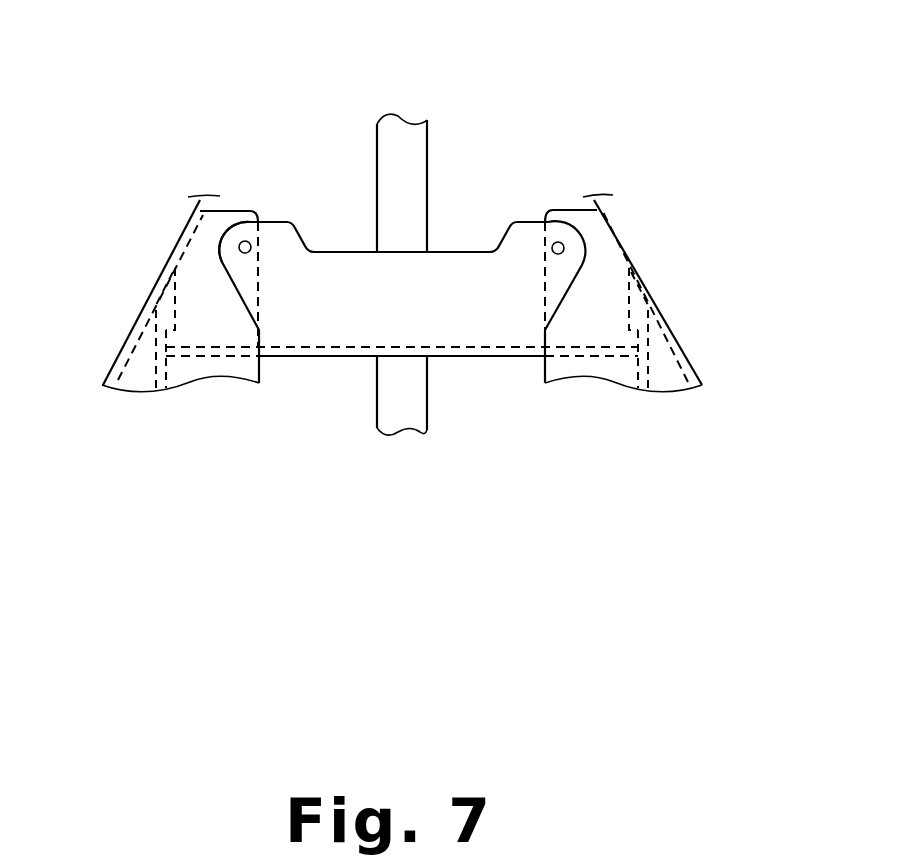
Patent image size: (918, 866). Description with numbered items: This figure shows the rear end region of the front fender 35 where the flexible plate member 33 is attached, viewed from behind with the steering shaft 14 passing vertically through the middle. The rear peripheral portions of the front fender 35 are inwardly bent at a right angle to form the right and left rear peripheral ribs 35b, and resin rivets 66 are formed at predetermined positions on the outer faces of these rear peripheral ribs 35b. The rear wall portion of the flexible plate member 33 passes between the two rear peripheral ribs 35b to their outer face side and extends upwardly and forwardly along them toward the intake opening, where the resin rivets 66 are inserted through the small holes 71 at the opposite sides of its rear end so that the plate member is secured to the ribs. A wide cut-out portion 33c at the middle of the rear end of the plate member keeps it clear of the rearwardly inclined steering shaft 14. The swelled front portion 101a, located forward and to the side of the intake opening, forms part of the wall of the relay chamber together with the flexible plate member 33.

The steering shaft 14 is at (427, 153).
The flexible plate member 33 is at (533, 220).
The cut-out portion 33c is at (453, 248).
The small holes 71 is at (250, 241).
The resin rivets 66 is at (223, 260).
The rear peripheral ribs 35b is at (208, 243).
The front fender 35 is at (652, 288).
The swelled front portion 101a is at (635, 253).